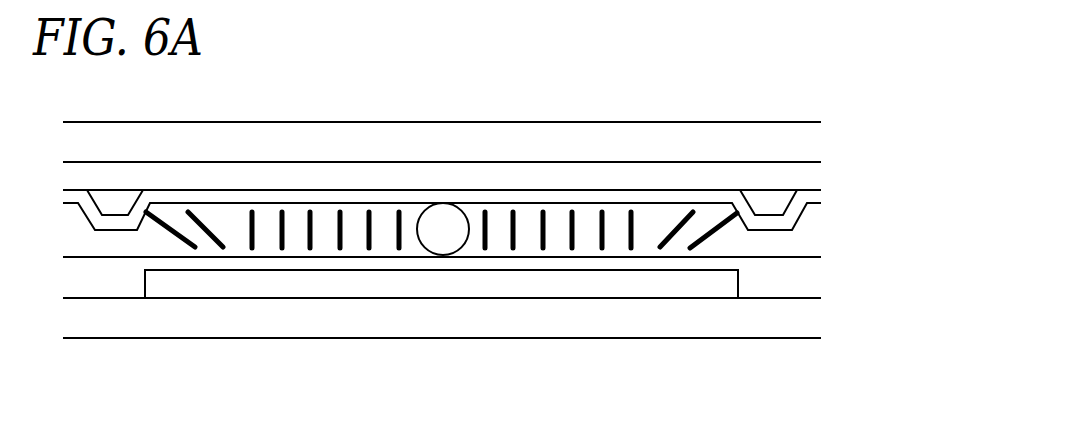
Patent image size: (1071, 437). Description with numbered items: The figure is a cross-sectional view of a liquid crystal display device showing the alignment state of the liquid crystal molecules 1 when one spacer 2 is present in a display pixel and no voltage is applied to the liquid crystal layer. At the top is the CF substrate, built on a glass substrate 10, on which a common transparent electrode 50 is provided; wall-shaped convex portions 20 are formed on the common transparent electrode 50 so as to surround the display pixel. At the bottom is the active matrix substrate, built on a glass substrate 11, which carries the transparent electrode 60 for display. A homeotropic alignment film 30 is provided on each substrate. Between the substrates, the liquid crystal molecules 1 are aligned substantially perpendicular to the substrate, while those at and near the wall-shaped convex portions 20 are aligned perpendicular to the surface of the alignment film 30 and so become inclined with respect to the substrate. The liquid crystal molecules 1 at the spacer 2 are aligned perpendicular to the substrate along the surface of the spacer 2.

The liquid crystal molecules 1 is at (370, 248).
The spacer 2 is at (455, 223).
The glass substrate 10 is at (797, 133).
The glass substrate 11 is at (803, 323).
The wall-shaped convex portions 20 is at (782, 200).
The homeotropic alignment film 30 is at (783, 226).
The common transparent electrode 50 is at (785, 178).
The transparent electrode 60 is at (577, 288).